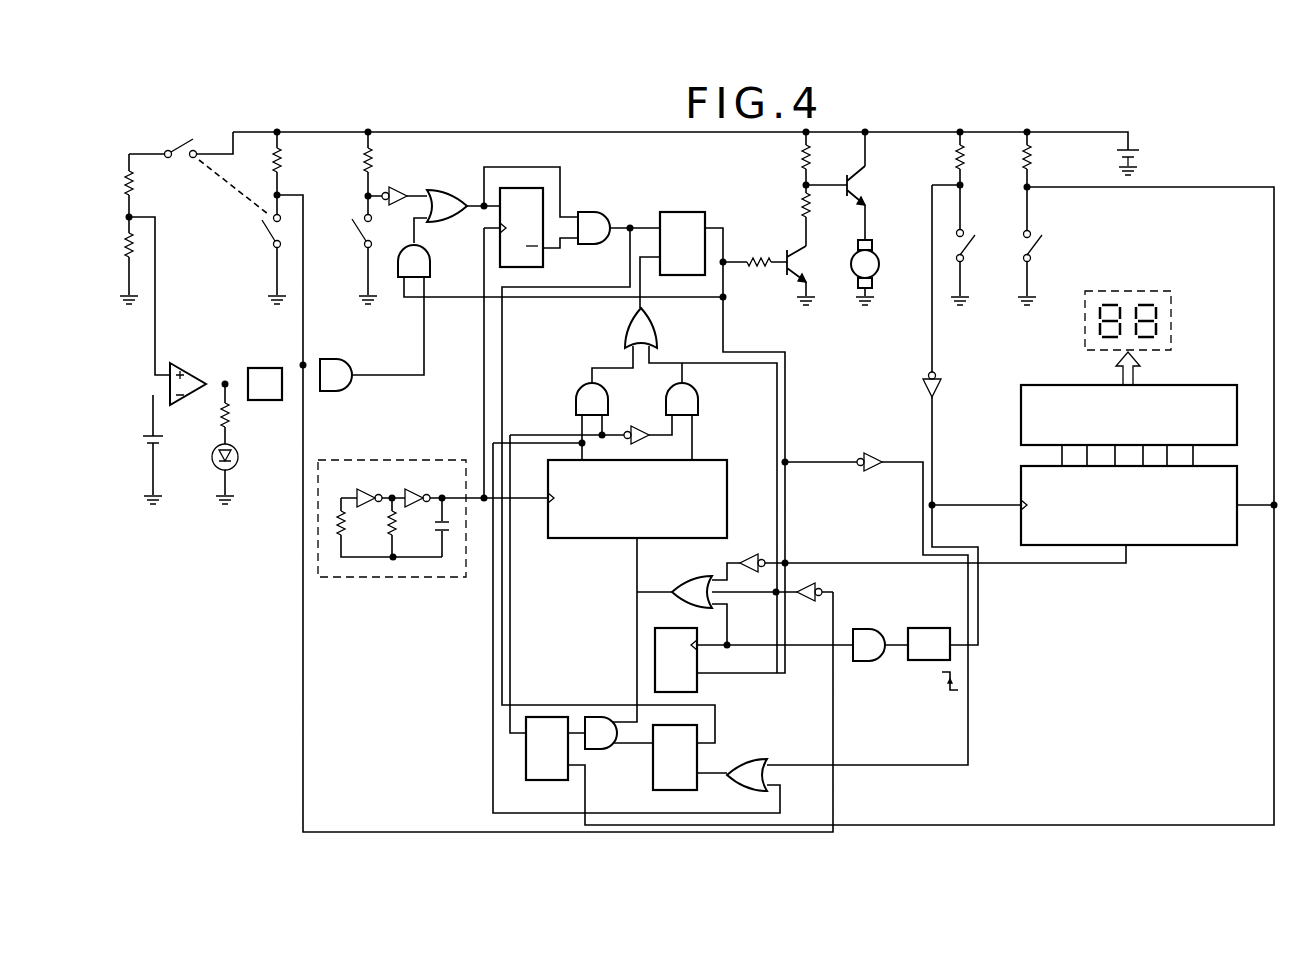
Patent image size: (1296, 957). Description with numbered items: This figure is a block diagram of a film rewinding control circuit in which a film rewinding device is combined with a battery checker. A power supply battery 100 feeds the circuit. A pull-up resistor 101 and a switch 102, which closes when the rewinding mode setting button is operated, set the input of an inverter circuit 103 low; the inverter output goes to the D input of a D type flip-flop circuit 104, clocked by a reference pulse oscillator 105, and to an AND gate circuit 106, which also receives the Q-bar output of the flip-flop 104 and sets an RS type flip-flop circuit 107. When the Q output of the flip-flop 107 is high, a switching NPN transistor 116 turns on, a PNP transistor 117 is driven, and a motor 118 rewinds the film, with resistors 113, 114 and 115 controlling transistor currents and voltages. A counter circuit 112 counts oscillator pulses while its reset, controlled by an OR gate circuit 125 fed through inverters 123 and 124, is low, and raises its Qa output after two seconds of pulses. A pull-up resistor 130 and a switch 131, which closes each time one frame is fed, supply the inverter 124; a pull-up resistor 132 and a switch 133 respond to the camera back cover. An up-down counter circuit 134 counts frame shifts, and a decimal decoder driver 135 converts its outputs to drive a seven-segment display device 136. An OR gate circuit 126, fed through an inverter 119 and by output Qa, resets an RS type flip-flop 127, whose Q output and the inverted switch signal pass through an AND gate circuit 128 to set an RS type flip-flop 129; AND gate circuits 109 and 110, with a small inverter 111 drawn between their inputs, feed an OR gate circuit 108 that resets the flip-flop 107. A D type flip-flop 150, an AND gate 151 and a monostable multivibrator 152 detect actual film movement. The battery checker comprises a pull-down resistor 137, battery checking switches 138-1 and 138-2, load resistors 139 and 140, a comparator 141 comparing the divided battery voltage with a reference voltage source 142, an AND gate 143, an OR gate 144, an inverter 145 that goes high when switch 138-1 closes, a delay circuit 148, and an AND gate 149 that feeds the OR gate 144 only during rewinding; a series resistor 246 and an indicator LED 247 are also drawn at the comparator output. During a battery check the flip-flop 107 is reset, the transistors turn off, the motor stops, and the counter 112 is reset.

The power supply battery 100 is at (1140, 155).
The pull-up resistor 101 is at (375, 163).
The switch 102 is at (356, 242).
The inverter circuit 103 is at (399, 210).
The D type flip-flop circuit 104 is at (537, 268).
The reference pulse oscillator 105 is at (405, 462).
The AND gate circuit 106 is at (601, 213).
The RS type flip-flop circuit 107 is at (688, 212).
The OR gate circuit 108 is at (618, 338).
The AND gate circuit 109 is at (578, 400).
The AND gate circuit 110 is at (698, 398).
The inverter 111 is at (640, 425).
The counter circuit 112 is at (720, 458).
The resistor 113 is at (757, 255).
The resistor 114 is at (800, 158).
The resistor 115 is at (812, 205).
The switching NPN transistor 116 is at (787, 275).
The PNP transistor 117 is at (860, 172).
The motor 118 is at (878, 262).
The inverter 119 is at (872, 452).
The inverter 123 is at (750, 553).
The inverter 124 is at (942, 382).
The OR gate circuit 125 is at (678, 578).
The OR gate circuit 126 is at (752, 757).
The RS type flip-flop 127 is at (688, 790).
The AND gate circuit 128 is at (609, 749).
The RS type flip-flop 129 is at (540, 782).
The pull-up resistor 130 is at (966, 166).
The switch 131 is at (970, 250).
The pull-up resistor 132 is at (1036, 160).
The switch 133 is at (1043, 244).
The up-down counter circuit 134 is at (1200, 548).
The decimal decoder driver 135 is at (1225, 384).
The 7-segment display device 136 is at (1137, 292).
The pull-down resistor 137 is at (284, 162).
The battery checking switch 138-1 is at (268, 232).
The battery checking switch 138-2 is at (205, 160).
The resistor 139 is at (135, 183).
The resistor 140 is at (137, 270).
The comparator 141 is at (190, 366).
The reference voltage source 142 is at (142, 438).
The AND gate 143 is at (348, 362).
The OR gate 144 is at (440, 190).
The inverter 145 is at (808, 600).
The delay circuit 148 is at (266, 367).
The AND gate 149 is at (428, 268).
The D type flip-flop 150 is at (656, 628).
The AND gate 151 is at (872, 630).
The monostable multivibrator 152 is at (933, 630).
The resistor 246 is at (236, 416).
The light emitting diode 247 is at (240, 463).